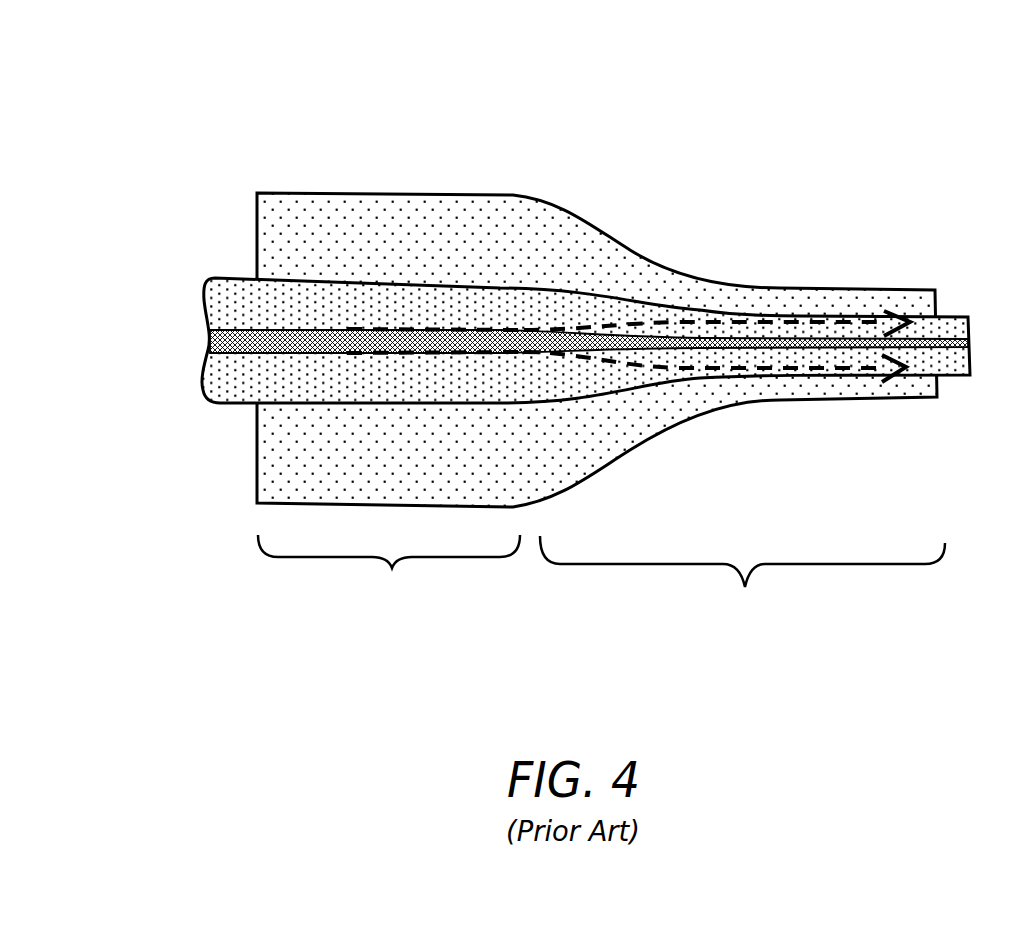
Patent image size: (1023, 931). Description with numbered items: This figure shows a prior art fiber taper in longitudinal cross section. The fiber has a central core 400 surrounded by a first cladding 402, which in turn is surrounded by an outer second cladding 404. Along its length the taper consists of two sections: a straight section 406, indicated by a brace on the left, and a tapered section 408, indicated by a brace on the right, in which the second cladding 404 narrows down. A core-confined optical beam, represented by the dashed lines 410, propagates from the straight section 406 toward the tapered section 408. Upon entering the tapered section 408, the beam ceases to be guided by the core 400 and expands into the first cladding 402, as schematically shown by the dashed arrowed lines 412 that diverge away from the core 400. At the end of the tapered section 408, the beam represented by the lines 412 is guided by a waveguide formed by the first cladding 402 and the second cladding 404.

The core 400 is at (268, 342).
The first cladding 402 is at (234, 279).
The second cladding 404 is at (513, 195).
The straight section 406 is at (392, 568).
The tapered section 408 is at (745, 587).
The dashed lines 410 is at (336, 329).
The dashed arrowed lines 412 is at (822, 367).